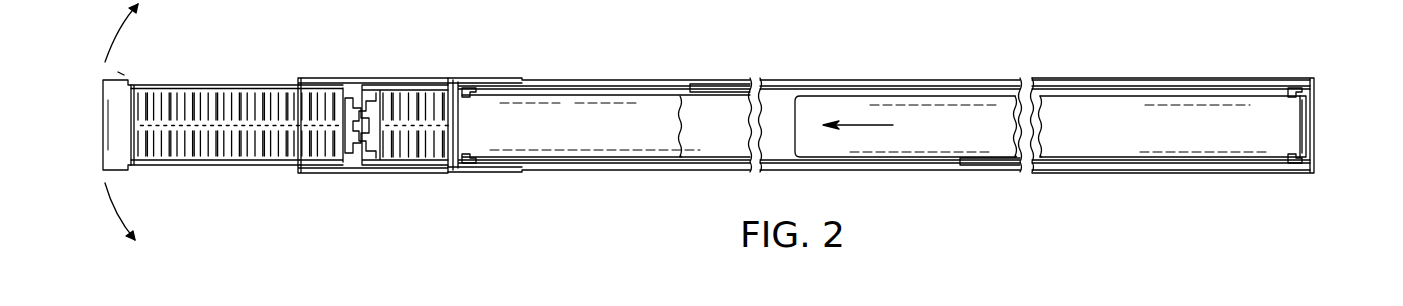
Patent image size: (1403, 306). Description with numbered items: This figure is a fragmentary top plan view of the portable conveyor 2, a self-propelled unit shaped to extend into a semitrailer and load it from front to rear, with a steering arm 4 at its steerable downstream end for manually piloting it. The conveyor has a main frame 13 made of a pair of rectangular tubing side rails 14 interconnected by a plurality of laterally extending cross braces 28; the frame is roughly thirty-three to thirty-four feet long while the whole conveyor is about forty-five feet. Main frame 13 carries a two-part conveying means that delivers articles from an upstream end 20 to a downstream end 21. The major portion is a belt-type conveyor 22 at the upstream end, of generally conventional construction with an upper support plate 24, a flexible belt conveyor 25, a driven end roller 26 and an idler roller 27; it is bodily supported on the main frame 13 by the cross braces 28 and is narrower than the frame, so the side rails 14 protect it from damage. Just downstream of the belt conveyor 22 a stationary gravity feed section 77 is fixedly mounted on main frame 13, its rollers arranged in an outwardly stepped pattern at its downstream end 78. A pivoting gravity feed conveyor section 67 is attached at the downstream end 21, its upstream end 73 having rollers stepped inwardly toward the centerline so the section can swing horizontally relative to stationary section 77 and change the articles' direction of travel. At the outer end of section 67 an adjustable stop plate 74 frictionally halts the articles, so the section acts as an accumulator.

The portable conveyor 2 is at (1278, 72).
The steering arm 4 is at (182, 167).
The main frame 13 is at (912, 170).
The side rails 14 is at (587, 78).
The upstream end 20 is at (1303, 128).
The downstream end 21 is at (196, 112).
The belt-type conveyor 22 is at (1078, 118).
The upper support plate 24 is at (978, 92).
The flexible belt conveyor 25 is at (912, 100).
The driven end roller 26 is at (472, 163).
The idler roller 27 is at (1288, 166).
The cross braces 28 is at (685, 88).
The gravity feed conveyor section 67 is at (246, 143).
The upstream end of gravity feed section 73 is at (354, 97).
The stop plate 74 is at (113, 114).
The stationary gravity feed section 77 is at (420, 105).
The downstream end of stationary section 78 is at (372, 108).